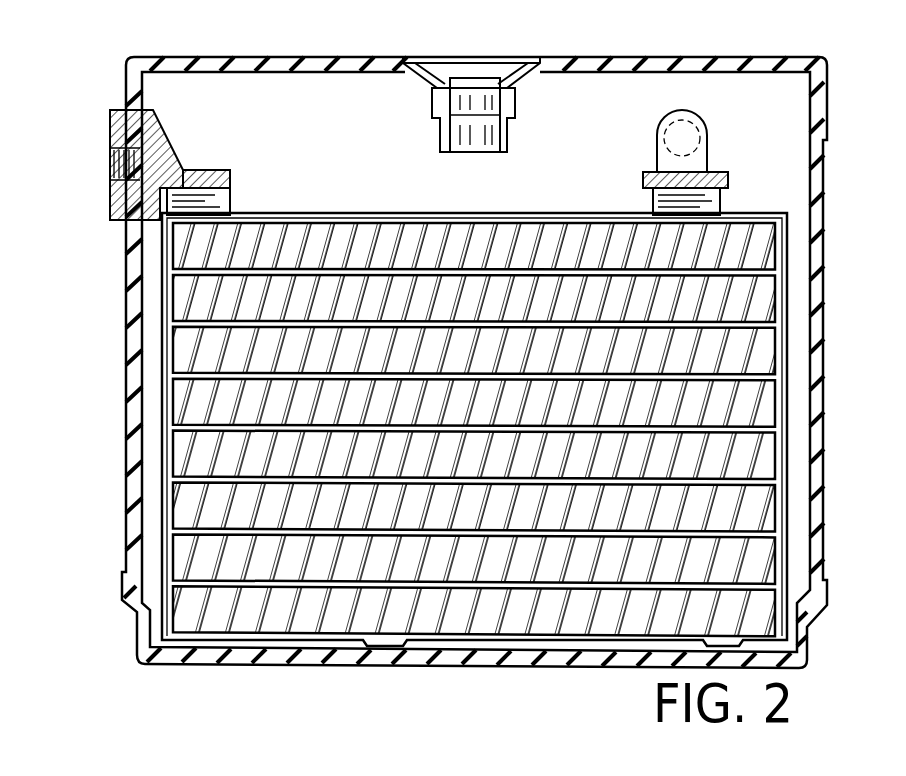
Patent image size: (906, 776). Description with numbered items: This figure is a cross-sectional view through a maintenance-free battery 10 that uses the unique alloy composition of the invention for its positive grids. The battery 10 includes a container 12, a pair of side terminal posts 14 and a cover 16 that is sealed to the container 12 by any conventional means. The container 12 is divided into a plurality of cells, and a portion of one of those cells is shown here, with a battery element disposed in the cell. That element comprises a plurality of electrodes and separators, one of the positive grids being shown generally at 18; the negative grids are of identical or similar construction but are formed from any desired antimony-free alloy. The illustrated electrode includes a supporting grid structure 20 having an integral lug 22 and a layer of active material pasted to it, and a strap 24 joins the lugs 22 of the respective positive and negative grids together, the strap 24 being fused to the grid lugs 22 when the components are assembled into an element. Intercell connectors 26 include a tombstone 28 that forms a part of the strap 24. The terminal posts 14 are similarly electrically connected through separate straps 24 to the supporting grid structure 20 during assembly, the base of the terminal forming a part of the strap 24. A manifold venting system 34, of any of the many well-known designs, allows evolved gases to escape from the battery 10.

The maintenance-free battery 10 is at (260, 660).
The container 12 is at (822, 303).
The side terminal posts 14 is at (110, 152).
The cover 16 is at (652, 56).
The positive grid 18 is at (172, 611).
The supporting grid structure 20 is at (783, 403).
The lug 22 is at (220, 203).
The strap 24 is at (228, 172).
The intercell connectors 26 is at (700, 141).
The tombstone 28 is at (690, 160).
The manifold venting systems 34 is at (487, 60).